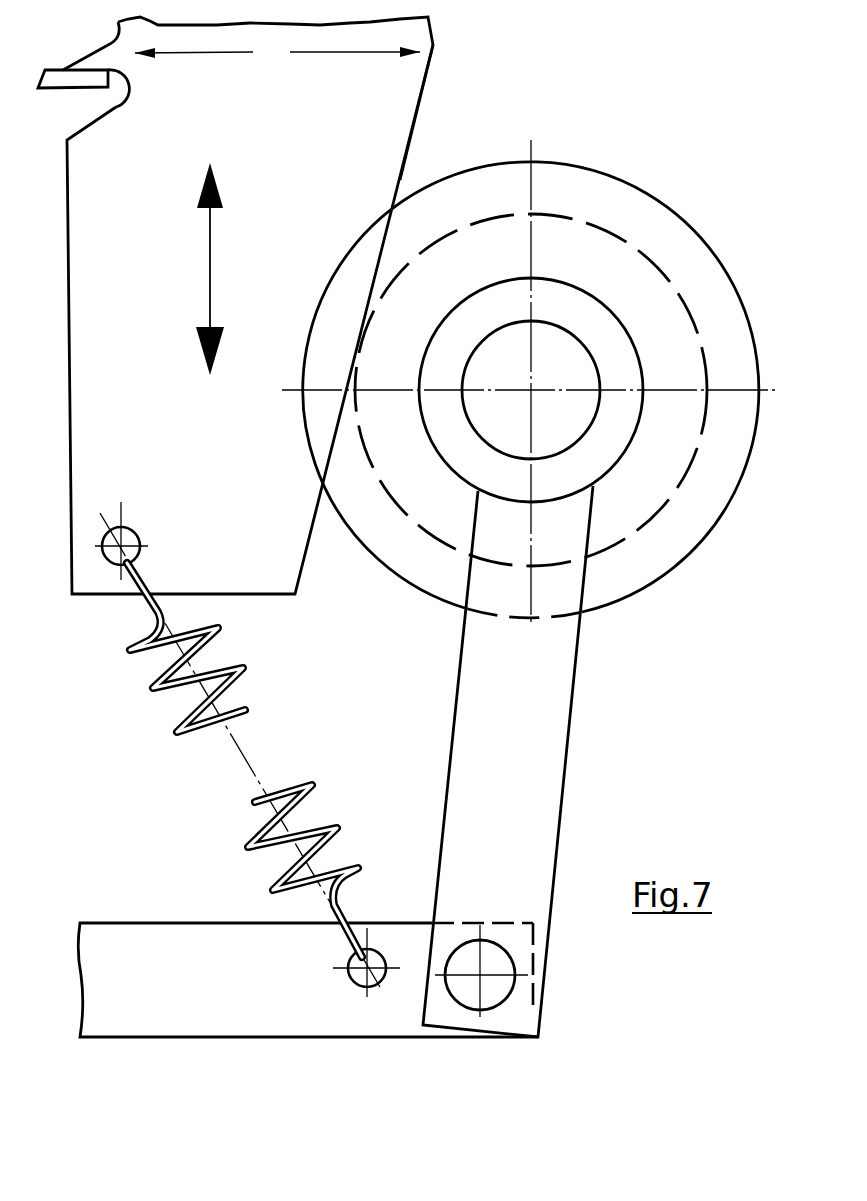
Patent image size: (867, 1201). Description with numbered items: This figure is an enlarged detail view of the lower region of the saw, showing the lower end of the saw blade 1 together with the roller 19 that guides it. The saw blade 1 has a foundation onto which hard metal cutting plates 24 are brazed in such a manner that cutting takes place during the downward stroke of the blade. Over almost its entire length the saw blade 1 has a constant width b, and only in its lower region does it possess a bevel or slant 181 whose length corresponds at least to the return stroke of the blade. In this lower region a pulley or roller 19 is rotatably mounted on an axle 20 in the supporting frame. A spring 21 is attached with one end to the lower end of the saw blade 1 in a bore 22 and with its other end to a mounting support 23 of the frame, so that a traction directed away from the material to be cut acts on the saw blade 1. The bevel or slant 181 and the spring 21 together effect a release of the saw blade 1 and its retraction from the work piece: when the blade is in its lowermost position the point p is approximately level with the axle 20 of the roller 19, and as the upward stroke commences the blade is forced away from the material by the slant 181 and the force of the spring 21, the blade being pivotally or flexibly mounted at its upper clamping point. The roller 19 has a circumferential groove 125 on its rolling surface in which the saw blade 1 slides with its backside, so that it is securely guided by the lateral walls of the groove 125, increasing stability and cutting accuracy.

The saw blade 1 is at (106, 581).
The roller 19 is at (690, 550).
The axle 20 is at (551, 344).
The spring 21 is at (243, 670).
The bore 22 is at (132, 537).
The lever bar 23 is at (303, 1013).
The hard metal cutting plates 24 is at (95, 77).
The circumferential groove 125 is at (450, 550).
The bevel or slant 181 is at (417, 120).
The point P p is at (432, 58).
The width b is at (277, 50).